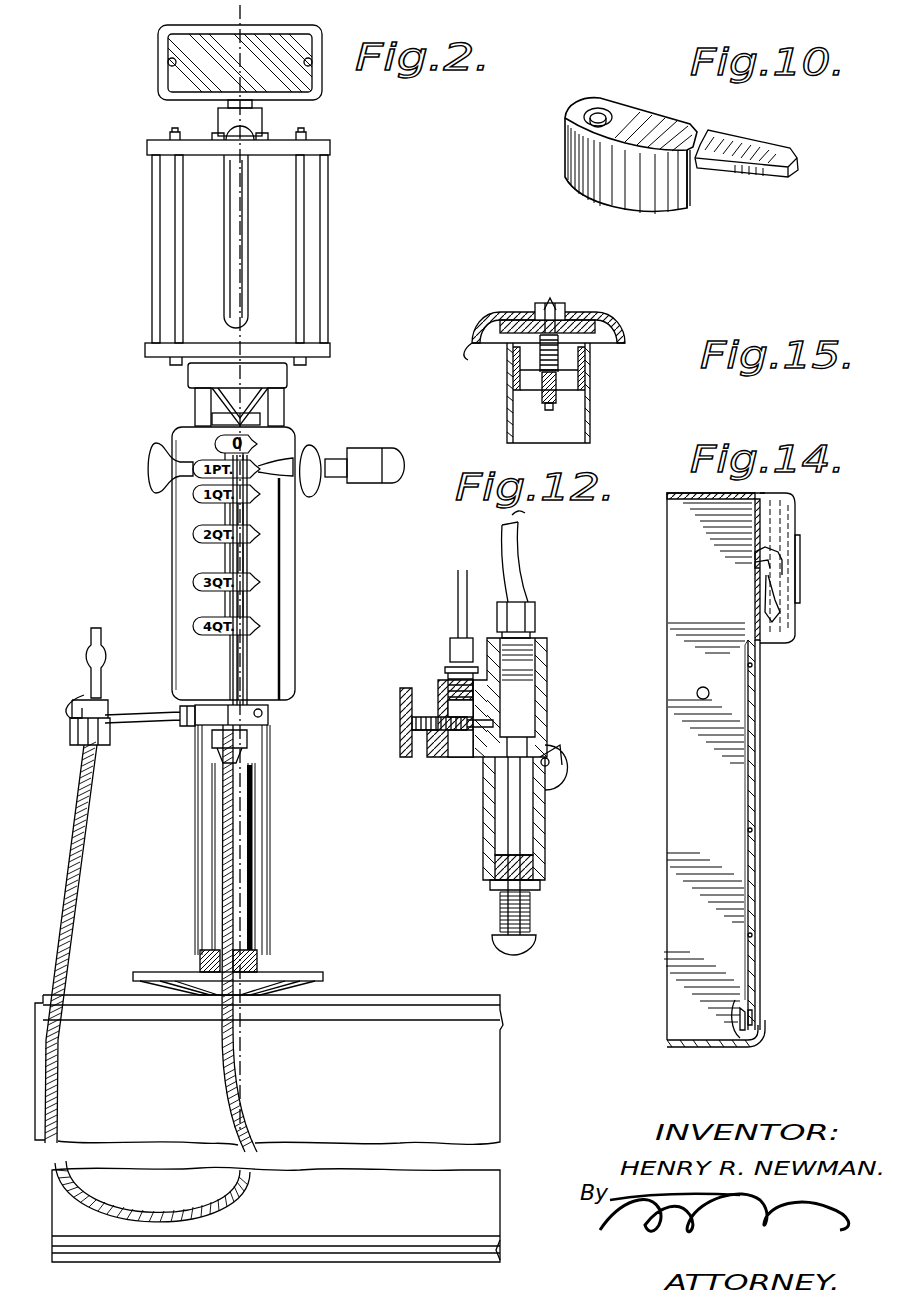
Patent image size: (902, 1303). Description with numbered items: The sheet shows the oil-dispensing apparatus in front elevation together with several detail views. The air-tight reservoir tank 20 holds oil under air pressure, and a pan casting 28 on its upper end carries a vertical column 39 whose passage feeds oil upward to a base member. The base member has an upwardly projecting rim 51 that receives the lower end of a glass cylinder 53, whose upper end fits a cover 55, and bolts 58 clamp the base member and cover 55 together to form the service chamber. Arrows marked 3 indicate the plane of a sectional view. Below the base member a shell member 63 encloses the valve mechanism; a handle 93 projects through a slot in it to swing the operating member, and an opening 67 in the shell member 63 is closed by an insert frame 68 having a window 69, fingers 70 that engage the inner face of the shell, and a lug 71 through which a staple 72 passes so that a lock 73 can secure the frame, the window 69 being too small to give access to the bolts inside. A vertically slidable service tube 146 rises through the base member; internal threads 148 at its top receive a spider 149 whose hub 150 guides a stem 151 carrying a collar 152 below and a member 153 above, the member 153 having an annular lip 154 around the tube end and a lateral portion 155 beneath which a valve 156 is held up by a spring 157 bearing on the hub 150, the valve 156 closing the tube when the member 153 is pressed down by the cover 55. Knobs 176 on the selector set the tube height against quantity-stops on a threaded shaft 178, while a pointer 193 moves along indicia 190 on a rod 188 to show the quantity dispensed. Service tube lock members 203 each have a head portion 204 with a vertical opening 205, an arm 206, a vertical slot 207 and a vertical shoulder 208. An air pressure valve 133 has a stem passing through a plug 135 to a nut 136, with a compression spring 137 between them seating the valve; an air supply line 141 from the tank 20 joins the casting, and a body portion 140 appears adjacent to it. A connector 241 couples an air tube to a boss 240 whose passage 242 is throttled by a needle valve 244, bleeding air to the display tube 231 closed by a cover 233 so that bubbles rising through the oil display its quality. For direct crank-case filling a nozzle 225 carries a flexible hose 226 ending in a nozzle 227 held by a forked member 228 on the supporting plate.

In FIG. 2, the section line indicator 3 is at (222, 10).
In FIG. 2, the reservoir tank 20 is at (487, 1068).
In FIG. 2, the pan casting 28 is at (318, 985).
In FIG. 2, the vertical column 39 is at (258, 875).
In FIG. 2, the rim 51 is at (330, 350).
In FIG. 2, the glass cylinder 53 is at (328, 242).
In FIG. 2, the cover 55 is at (330, 147).
In FIG. 2, the bolts 58 is at (305, 303).
In FIG. 2, the handle 93 is at (388, 470).
In FIG. 2, the knobs 176 is at (318, 493).
In FIG. 2, the shaft 178 is at (241, 680).
In FIG. 2, the rod 188 is at (240, 668).
In FIG. 2, the indicia 190 is at (193, 534).
In FIG. 2, the pointer 193 is at (281, 545).
In FIG. 2, the nozzle 225 is at (222, 752).
In FIG. 2, the flexible hose 226 is at (222, 855).
In FIG. 2, the nozzle 227 is at (100, 672).
In FIG. 2, the forked member 228 is at (130, 726).
In FIG. 2, the display tube 231 is at (250, 225).
In FIG. 2, the cover 233 is at (250, 128).
In FIG. 10, the service tube lock member 203 is at (650, 125).
In FIG. 10, the head portion 204 is at (570, 165).
In FIG. 10, the vertically extending opening 205 is at (603, 118).
In FIG. 10, the arm 206 is at (770, 160).
In FIG. 10, the vertical slot 207 is at (708, 140).
In FIG. 10, the vertical shoulder 208 is at (687, 202).
In FIG. 15, the service tube 146 is at (592, 438).
In FIG. 15, the internal threads 148 is at (588, 372).
In FIG. 15, the spider 149 is at (512, 380).
In FIG. 15, the hub 150 is at (542, 380).
In FIG. 15, the stem 151 is at (565, 312).
In FIG. 15, the collar 152 is at (549, 410).
In FIG. 15, the member 153 is at (505, 318).
In FIG. 15, the annular lip 154 is at (466, 356).
In FIG. 15, the lateral portion 155 is at (547, 310).
In FIG. 15, the valve 156 is at (552, 316).
In FIG. 15, the spring 157 is at (558, 355).
In FIG. 12, the air pressure valve 133 is at (525, 806).
In FIG. 12, the plug 135 is at (540, 885).
In FIG. 12, the nut 136 is at (525, 950).
In FIG. 12, the compression spring 137 is at (530, 912).
In FIG. 12, the valve body 140 is at (548, 672).
In FIG. 12, the air supply line 141 is at (526, 580).
In FIG. 12, the boss 240 is at (450, 745).
In FIG. 12, the connector 241 is at (455, 665).
In FIG. 12, the passage 242 is at (430, 712).
In FIG. 12, the needle valve 244 is at (465, 745).
In FIG. 14, the shell member 63 is at (680, 892).
In FIG. 14, the opening 67 is at (760, 1040).
In FIG. 14, the insert frame 68 is at (752, 1017).
In FIG. 14, the window 69 is at (760, 965).
In FIG. 14, the fingers 70 is at (720, 1050).
In FIG. 14, the lug 71 is at (770, 532).
In FIG. 14, the staple 72 is at (778, 553).
In FIG. 14, the lock 73 is at (778, 600).